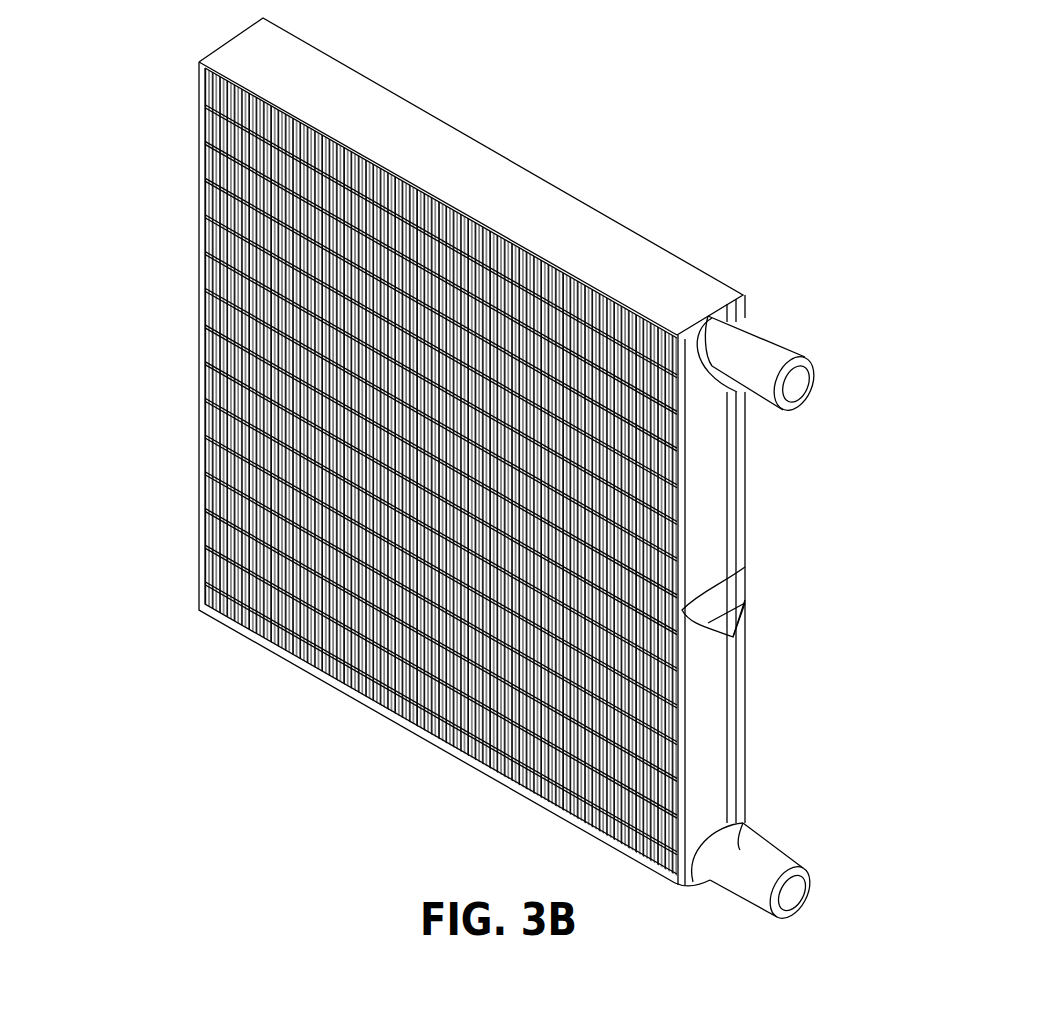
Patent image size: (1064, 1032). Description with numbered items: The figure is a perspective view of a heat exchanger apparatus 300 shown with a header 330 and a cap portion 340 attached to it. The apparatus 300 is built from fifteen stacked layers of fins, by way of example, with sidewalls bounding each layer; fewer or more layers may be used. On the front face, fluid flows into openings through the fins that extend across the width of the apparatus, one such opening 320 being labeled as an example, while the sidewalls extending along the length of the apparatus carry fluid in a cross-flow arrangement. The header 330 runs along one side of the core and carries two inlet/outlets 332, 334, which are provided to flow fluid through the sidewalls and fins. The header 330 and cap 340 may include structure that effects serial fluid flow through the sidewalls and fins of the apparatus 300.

The heat exchanger apparatus 300 is at (933, 46).
The opening 320 is at (203, 79).
The header 330 is at (747, 491).
The inlet/outlet 332 is at (783, 852).
The inlet/outlet 334 is at (783, 342).
The cap portion 340 is at (211, 43).